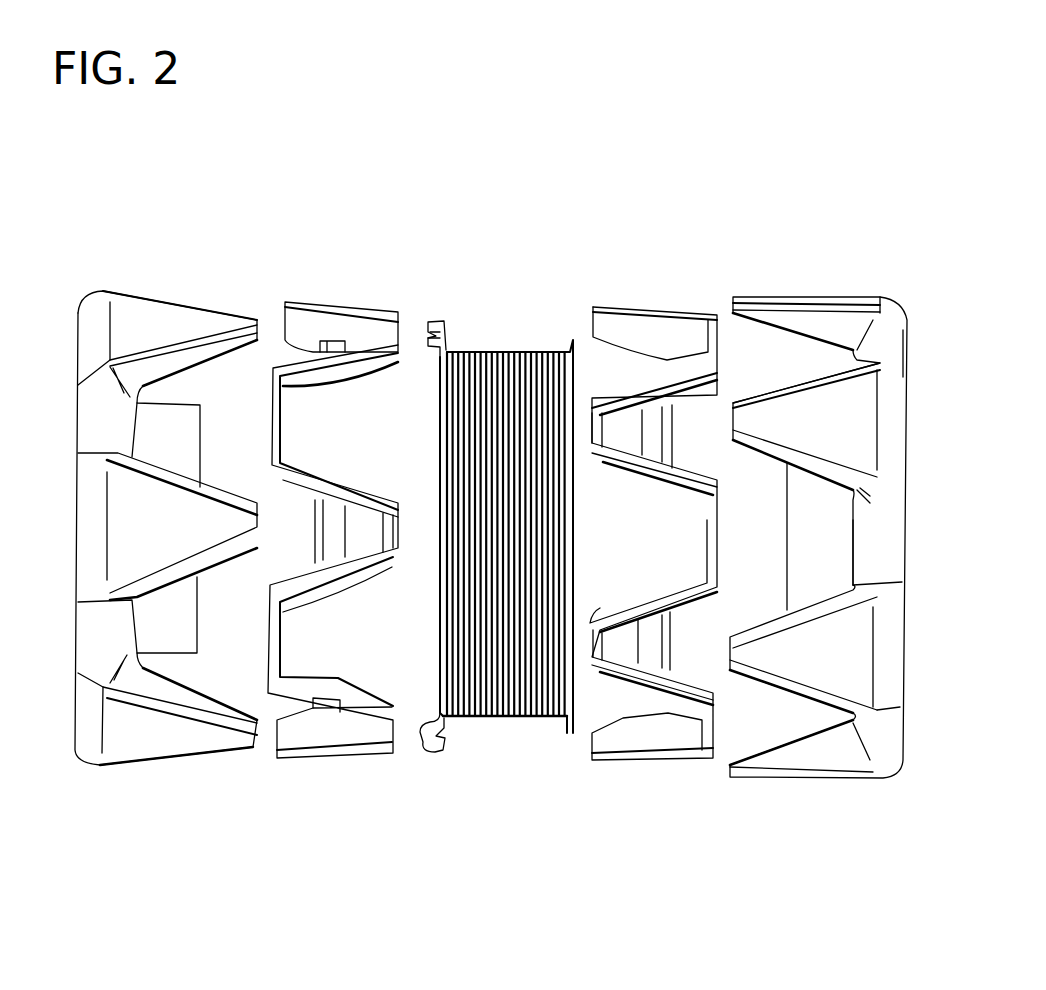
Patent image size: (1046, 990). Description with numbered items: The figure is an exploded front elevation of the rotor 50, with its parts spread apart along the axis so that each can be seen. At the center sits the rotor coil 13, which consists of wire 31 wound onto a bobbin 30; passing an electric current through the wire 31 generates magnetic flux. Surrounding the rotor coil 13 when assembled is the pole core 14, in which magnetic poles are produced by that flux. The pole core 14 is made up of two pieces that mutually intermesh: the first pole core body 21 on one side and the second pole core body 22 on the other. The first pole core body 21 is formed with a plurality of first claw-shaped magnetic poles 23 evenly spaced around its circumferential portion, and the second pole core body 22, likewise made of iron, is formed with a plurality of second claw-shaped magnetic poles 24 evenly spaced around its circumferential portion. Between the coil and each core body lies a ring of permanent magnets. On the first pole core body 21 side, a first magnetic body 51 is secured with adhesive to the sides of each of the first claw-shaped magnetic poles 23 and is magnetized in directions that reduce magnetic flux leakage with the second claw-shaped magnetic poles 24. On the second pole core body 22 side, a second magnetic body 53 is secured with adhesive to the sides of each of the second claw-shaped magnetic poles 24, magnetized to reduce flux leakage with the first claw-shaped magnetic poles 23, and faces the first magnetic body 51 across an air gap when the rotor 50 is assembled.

The rotor 50 is at (476, 216).
The pole core 14 is at (750, 283).
The second claw-shaped magnetic poles 24 is at (167, 305).
The second pole core body 22 is at (200, 745).
The first claw-shaped magnetic poles 23 is at (767, 445).
The first pole core body 21 is at (810, 780).
The first magnetic body 51 is at (650, 308).
The second magnetic body 53 is at (340, 755).
The rotor coil 13 is at (531, 352).
The bobbin 30 is at (445, 728).
The wire 31 is at (520, 720).